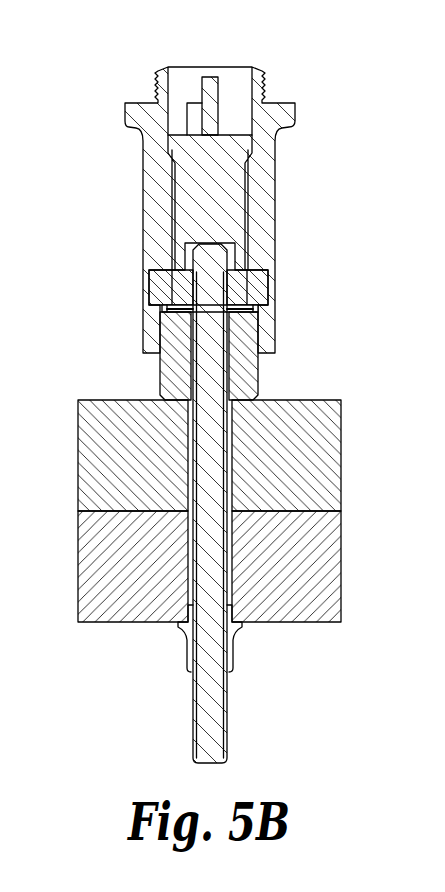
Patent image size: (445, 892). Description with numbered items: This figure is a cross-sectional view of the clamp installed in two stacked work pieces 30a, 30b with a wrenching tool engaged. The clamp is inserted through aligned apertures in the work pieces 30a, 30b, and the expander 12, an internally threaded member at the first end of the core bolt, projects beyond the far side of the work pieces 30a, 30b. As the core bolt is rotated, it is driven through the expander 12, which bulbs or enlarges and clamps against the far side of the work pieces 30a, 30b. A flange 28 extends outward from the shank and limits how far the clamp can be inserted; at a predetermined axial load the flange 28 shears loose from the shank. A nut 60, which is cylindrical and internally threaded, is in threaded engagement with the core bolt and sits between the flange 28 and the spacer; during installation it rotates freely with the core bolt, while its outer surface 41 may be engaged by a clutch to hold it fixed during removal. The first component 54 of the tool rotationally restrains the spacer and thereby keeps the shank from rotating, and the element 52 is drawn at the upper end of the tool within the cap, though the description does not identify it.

The expander 12 is at (228, 660).
The flange 28 is at (258, 397).
The work piece 30a is at (326, 473).
The work piece 30b is at (326, 567).
The outer surface 41 is at (212, 210).
The terminal pin 52 is at (220, 96).
The first component 54 is at (275, 158).
The nut 60 is at (242, 284).